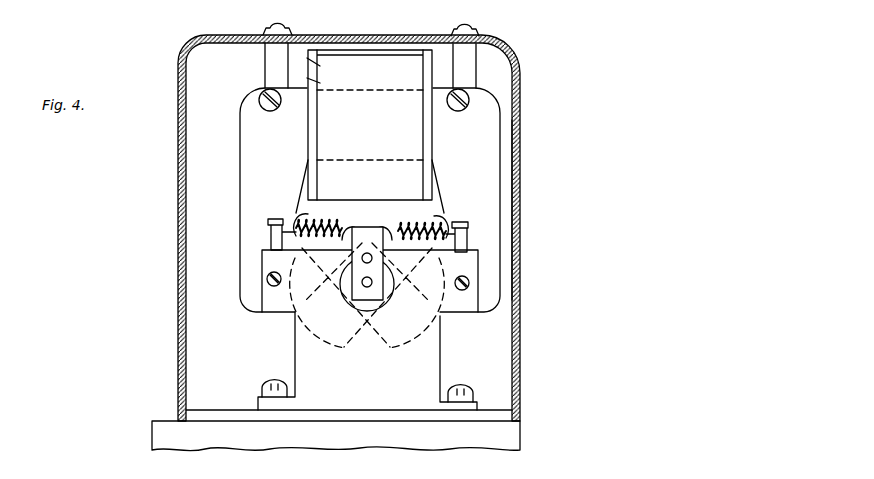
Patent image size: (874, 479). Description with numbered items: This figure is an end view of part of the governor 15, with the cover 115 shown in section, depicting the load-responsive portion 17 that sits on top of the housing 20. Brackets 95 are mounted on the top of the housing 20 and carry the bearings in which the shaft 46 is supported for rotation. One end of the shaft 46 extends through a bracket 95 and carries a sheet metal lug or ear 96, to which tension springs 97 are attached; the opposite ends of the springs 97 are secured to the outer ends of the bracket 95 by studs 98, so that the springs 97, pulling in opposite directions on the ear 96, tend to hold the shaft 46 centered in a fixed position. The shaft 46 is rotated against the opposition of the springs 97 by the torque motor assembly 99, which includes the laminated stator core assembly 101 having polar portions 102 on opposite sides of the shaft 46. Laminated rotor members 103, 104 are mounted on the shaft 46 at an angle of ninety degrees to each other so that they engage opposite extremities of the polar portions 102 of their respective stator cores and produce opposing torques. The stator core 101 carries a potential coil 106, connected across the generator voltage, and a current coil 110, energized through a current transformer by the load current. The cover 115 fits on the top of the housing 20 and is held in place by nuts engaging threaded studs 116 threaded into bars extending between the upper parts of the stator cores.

The governor 15 is at (170, 232).
The load-responsive portion 17 is at (220, 226).
The housing 20 is at (151, 438).
The shaft 46 is at (352, 288).
The brackets 95 is at (295, 346).
The sheet metal lug or ear 96 is at (390, 222).
The tension springs 97 is at (440, 218).
The studs 98 is at (270, 230).
The torque motor assembly 99 is at (250, 87).
The laminated stator core assembly 101 is at (240, 160).
The polar portions 102 is at (452, 328).
The laminated rotor member 103 is at (330, 330).
The laminated rotor member 104 is at (410, 333).
The potential coil 106 is at (306, 58).
The current coil 110 is at (306, 77).
The cover 115 is at (519, 97).
The threaded studs 116 is at (277, 22).